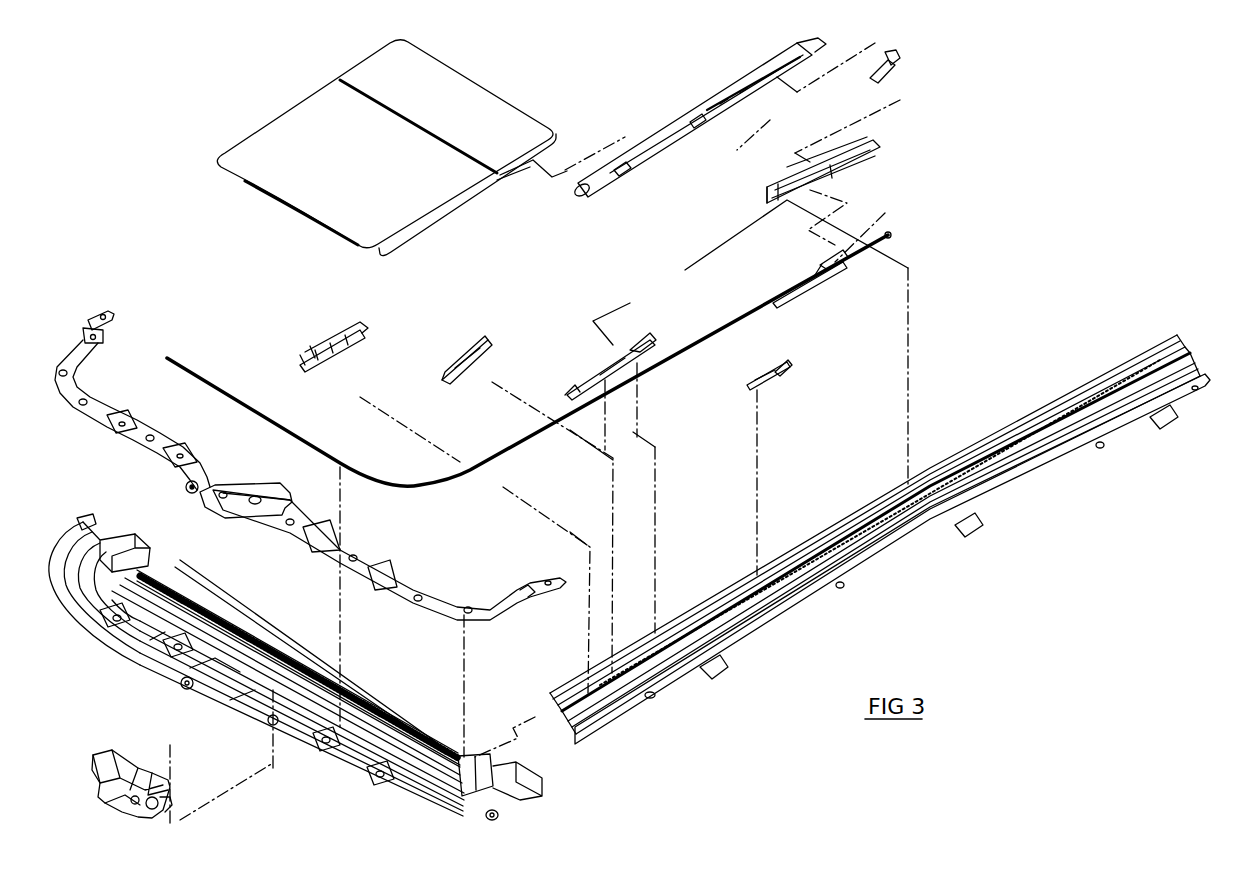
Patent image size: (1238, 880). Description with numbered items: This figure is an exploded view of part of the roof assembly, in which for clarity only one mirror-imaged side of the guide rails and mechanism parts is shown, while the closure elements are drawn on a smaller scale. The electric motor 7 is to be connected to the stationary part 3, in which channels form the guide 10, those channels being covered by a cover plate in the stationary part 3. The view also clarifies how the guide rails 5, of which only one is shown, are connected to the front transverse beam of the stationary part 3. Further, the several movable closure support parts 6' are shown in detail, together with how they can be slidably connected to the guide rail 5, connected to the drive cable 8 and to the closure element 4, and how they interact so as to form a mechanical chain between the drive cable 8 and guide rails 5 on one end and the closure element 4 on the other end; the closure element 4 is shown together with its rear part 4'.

The stationary part 3 is at (127, 585).
The closure element 4 is at (378, 148).
The roof panel rear part 4' is at (415, 93).
The guide rail 5 is at (1010, 483).
The movable closure support parts 6' is at (611, 231).
The electric motor 7 is at (113, 760).
The drive cable 8 is at (197, 368).
The guide 10 is at (367, 560).